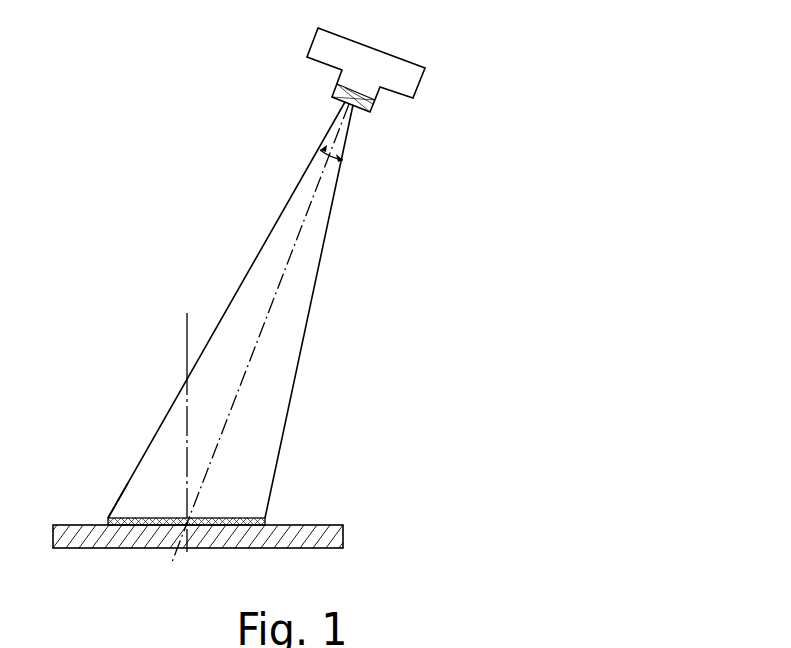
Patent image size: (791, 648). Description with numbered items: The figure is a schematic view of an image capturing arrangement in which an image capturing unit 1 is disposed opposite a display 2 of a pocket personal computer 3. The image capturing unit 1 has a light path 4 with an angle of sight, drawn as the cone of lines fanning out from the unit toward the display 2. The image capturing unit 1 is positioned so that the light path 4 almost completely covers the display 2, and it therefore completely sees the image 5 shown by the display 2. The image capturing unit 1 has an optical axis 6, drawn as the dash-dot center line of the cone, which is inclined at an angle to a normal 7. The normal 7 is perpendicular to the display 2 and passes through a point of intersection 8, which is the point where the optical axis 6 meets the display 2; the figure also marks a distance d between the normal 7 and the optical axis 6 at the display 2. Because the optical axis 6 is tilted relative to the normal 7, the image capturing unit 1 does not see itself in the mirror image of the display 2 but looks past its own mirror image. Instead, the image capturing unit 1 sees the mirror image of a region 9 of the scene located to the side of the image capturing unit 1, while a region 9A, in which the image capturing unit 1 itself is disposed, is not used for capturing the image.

The image capturing unit 1 is at (413, 63).
The display 2 is at (237, 517).
The pocket personal computer 3 is at (343, 532).
The light path 4 is at (348, 312).
The image 5 is at (142, 504).
The optical axis 6 is at (263, 333).
The normal 7 is at (187, 342).
The point of intersection 8 is at (212, 520).
The region 9 is at (195, 214).
The region 9A is at (525, 90).
The distance d is at (203, 472).